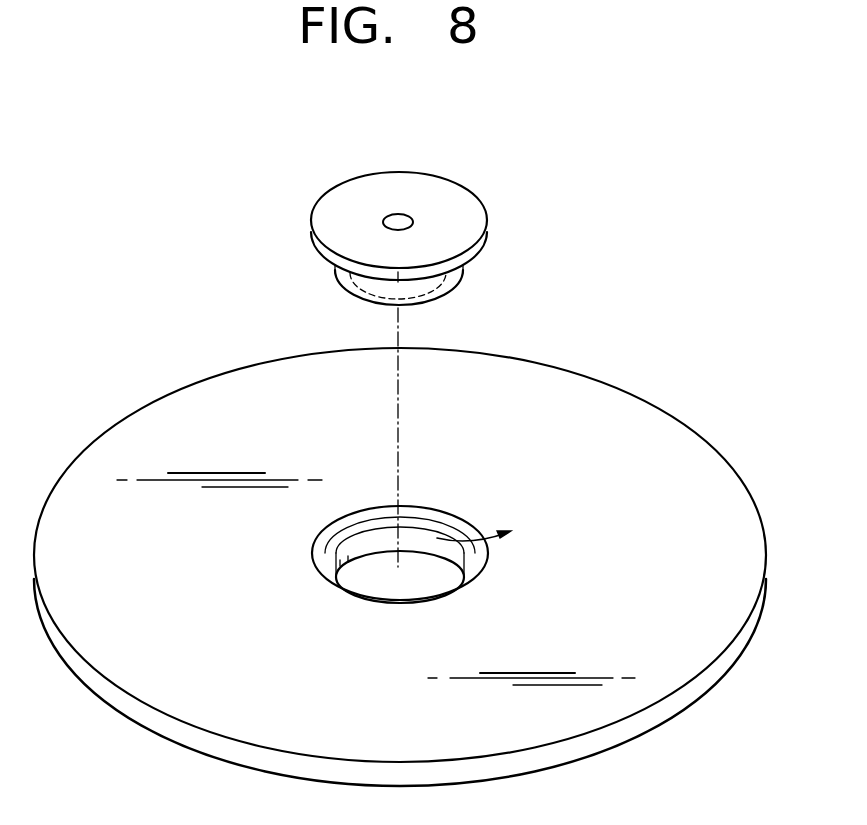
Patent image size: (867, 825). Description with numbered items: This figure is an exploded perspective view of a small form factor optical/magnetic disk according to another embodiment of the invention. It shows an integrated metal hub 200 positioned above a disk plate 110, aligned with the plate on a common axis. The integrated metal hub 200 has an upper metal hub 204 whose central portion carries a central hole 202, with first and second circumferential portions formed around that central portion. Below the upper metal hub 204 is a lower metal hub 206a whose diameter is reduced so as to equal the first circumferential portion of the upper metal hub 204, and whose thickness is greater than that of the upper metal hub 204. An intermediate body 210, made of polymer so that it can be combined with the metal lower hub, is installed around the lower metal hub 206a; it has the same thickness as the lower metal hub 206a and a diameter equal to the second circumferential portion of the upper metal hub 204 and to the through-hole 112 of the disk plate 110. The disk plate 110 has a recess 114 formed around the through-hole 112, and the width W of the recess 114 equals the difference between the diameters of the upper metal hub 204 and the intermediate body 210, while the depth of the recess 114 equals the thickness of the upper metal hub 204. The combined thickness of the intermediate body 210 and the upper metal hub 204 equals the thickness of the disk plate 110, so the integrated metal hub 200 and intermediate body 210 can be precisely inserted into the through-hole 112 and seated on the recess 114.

The integrated metal hub 200 is at (416, 202).
The central hole 202 is at (407, 217).
The upper metal hub 204 is at (488, 227).
The intermediate body 210 is at (335, 282).
The lower metal hub 206a is at (430, 287).
The disk plate 110 is at (683, 443).
The recess 114 is at (343, 538).
The through-hole 112 is at (413, 563).
The width of the recess W is at (433, 557).